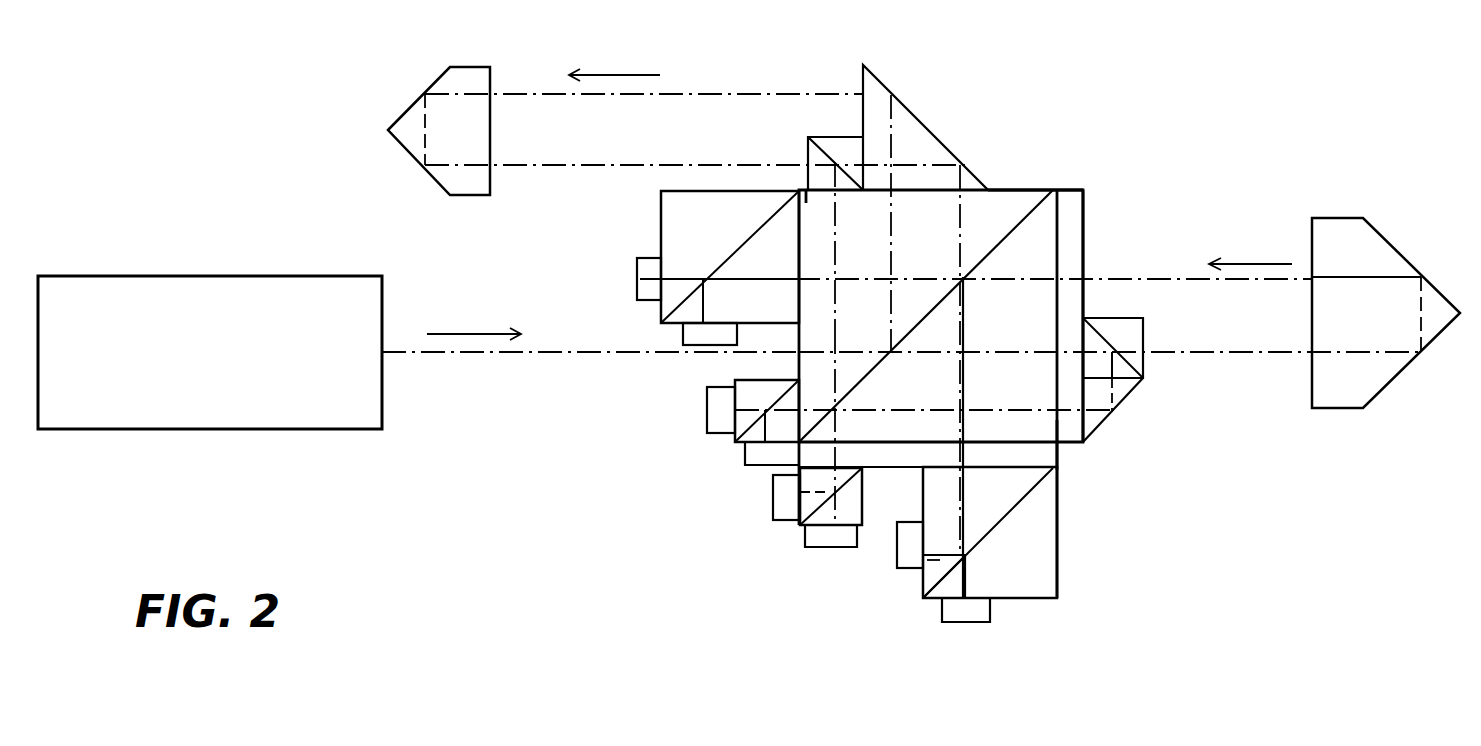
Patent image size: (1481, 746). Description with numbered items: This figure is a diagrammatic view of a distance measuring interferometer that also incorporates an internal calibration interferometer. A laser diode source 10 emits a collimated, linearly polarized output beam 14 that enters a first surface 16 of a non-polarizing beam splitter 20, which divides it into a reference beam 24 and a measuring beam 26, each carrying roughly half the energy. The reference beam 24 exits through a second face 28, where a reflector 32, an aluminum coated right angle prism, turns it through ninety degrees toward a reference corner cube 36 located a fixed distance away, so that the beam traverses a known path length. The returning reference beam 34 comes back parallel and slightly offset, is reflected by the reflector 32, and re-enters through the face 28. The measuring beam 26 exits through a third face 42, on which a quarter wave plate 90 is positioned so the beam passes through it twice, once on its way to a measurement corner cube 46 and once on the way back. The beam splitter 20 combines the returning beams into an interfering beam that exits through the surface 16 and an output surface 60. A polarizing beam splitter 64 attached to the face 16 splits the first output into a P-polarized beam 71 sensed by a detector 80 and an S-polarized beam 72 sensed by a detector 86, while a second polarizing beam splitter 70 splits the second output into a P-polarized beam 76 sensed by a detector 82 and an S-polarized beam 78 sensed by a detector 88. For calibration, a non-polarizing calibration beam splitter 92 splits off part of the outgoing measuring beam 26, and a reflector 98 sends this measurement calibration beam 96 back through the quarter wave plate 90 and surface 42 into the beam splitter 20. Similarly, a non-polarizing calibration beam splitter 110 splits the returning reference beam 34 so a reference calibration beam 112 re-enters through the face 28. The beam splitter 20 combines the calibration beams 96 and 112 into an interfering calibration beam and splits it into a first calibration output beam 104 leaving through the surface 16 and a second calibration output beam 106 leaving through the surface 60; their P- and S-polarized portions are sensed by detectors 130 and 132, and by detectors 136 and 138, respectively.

The laser diode source 10 is at (257, 276).
The output beam 14 is at (445, 354).
The first surface 16 is at (806, 190).
The non-polarizing beam splitter 20 is at (1040, 222).
The reference beam 24 is at (738, 94).
The measuring beam 26 is at (987, 352).
The second face 28 is at (1012, 190).
The reflector 32 is at (908, 115).
The returning reference beam 34 is at (543, 165).
The reference corner cube 36 is at (410, 110).
The third face 42 is at (1058, 272).
The measurement corner cube 46 is at (1405, 258).
The output surface 60 is at (905, 455).
The polarizing beam splitter 64 is at (660, 240).
The second polarizing beam splitter 70 is at (1058, 568).
The P-polarized beam 71 is at (680, 278).
The S-polarized beam 72 is at (705, 310).
The P-polarized beam 76 is at (968, 585).
The S-polarized beam 78 is at (935, 575).
The detector 80 is at (637, 272).
The detector 82 is at (965, 624).
The detector 86 is at (683, 333).
The detector 88 is at (897, 545).
The quarter wave plate 90 is at (1087, 243).
The non-polarizing calibration beam splitter 92 is at (1145, 328).
The measurement calibration beam 96 is at (1130, 398).
The reflector 98 is at (1095, 428).
The first calibration output beam 104 is at (820, 405).
The second calibration output beam 106 is at (838, 440).
The non-polarizing calibration beam splitter 110 is at (808, 137).
The reference calibration beam 112 is at (838, 215).
The detector 130 is at (707, 396).
The detector 132 is at (745, 463).
The detector 136 is at (812, 547).
The detector 138 is at (773, 520).